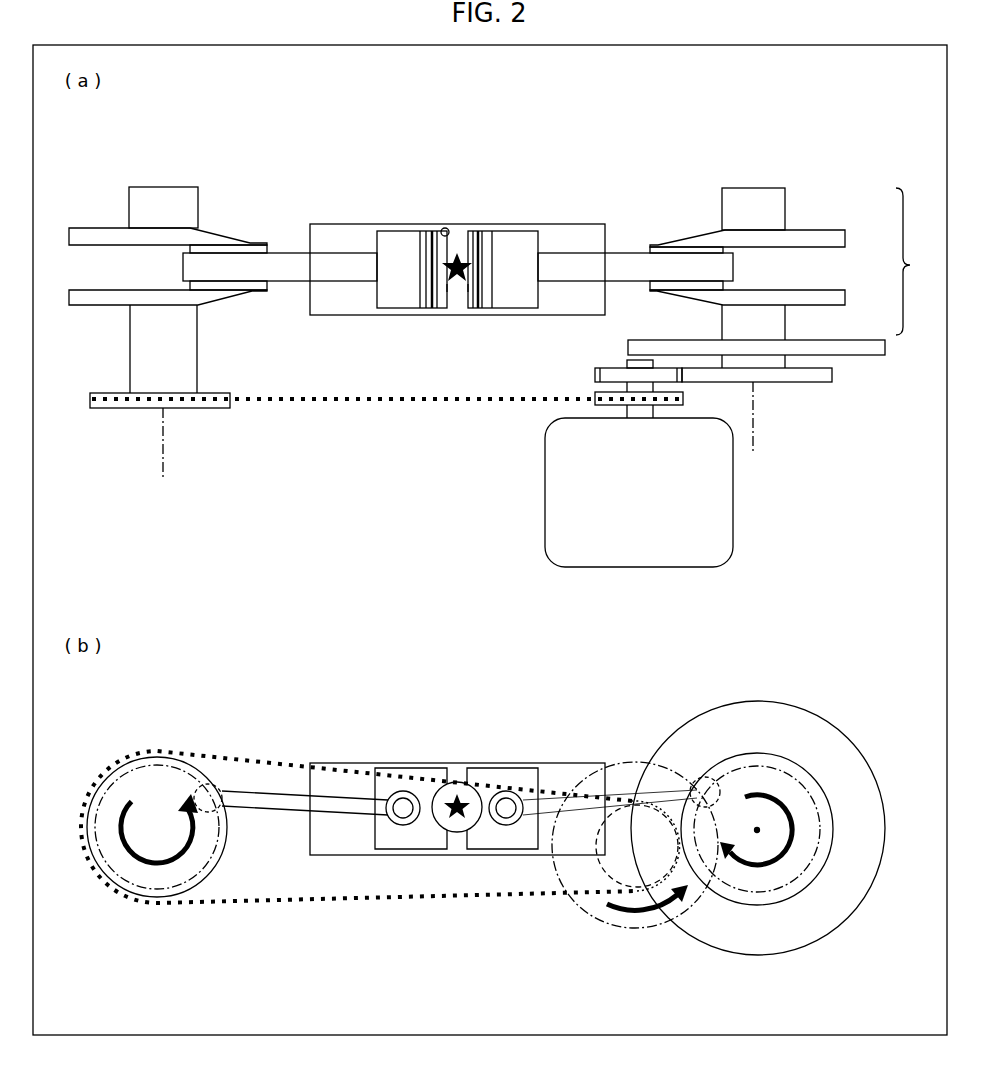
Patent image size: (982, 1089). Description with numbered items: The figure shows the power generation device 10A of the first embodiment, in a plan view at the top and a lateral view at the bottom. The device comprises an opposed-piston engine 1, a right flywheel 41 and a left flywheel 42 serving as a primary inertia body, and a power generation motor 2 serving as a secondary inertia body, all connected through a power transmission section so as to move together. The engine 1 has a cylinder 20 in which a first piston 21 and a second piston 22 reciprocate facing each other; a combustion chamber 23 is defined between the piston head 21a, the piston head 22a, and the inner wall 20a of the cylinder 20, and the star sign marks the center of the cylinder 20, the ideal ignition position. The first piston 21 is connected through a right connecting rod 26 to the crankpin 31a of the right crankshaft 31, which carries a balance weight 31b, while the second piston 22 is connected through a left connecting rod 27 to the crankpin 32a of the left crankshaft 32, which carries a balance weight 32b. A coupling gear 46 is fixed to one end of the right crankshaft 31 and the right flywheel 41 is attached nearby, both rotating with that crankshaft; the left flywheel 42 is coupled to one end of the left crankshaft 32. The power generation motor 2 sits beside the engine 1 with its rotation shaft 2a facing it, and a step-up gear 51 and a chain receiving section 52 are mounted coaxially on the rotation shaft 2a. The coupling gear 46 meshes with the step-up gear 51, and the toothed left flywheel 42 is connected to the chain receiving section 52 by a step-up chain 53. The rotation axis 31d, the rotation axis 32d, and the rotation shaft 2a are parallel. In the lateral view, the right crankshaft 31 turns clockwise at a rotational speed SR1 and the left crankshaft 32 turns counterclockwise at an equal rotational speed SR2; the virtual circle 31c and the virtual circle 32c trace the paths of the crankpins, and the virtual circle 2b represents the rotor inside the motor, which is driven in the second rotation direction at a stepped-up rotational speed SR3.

The engine 1 is at (913, 261).
The power generation motor 2 is at (733, 520).
The rotation shaft 2a is at (642, 360).
The virtual circle 2b is at (610, 926).
The power generation device 10A is at (838, 113).
The cylinder 20 is at (582, 224).
The inner wall 20a is at (445, 228).
The first piston 21 is at (505, 237).
The piston head 21a is at (463, 288).
The second piston 22 is at (417, 237).
The piston head 22a is at (453, 288).
The combustion chamber 23 is at (460, 245).
The right connecting rod 26 is at (630, 256).
The left connecting rod 27 is at (288, 282).
The right crankshaft 31 is at (756, 185).
The crankpin 31a is at (687, 234).
The balance weight 31b is at (823, 226).
The virtual circle 31c is at (790, 865).
The rotation axis 31d is at (768, 442).
The left crankshaft 32 is at (163, 185).
The crankpin 32a is at (255, 240).
The balance weight 32b is at (87, 225).
The virtual circle 32c is at (157, 890).
The rotation axis 32d is at (173, 463).
The right flywheel 41 is at (866, 342).
The left flywheel 42 is at (113, 392).
The coupling gear 46 is at (817, 383).
The step-up gear 51 is at (608, 368).
The chain receiving section 52 is at (693, 394).
The step-up chain 53 is at (258, 405).
The rotational speed SR1 is at (753, 868).
The rotational speed SR2 is at (138, 856).
The rotational speed SR3 is at (637, 930).